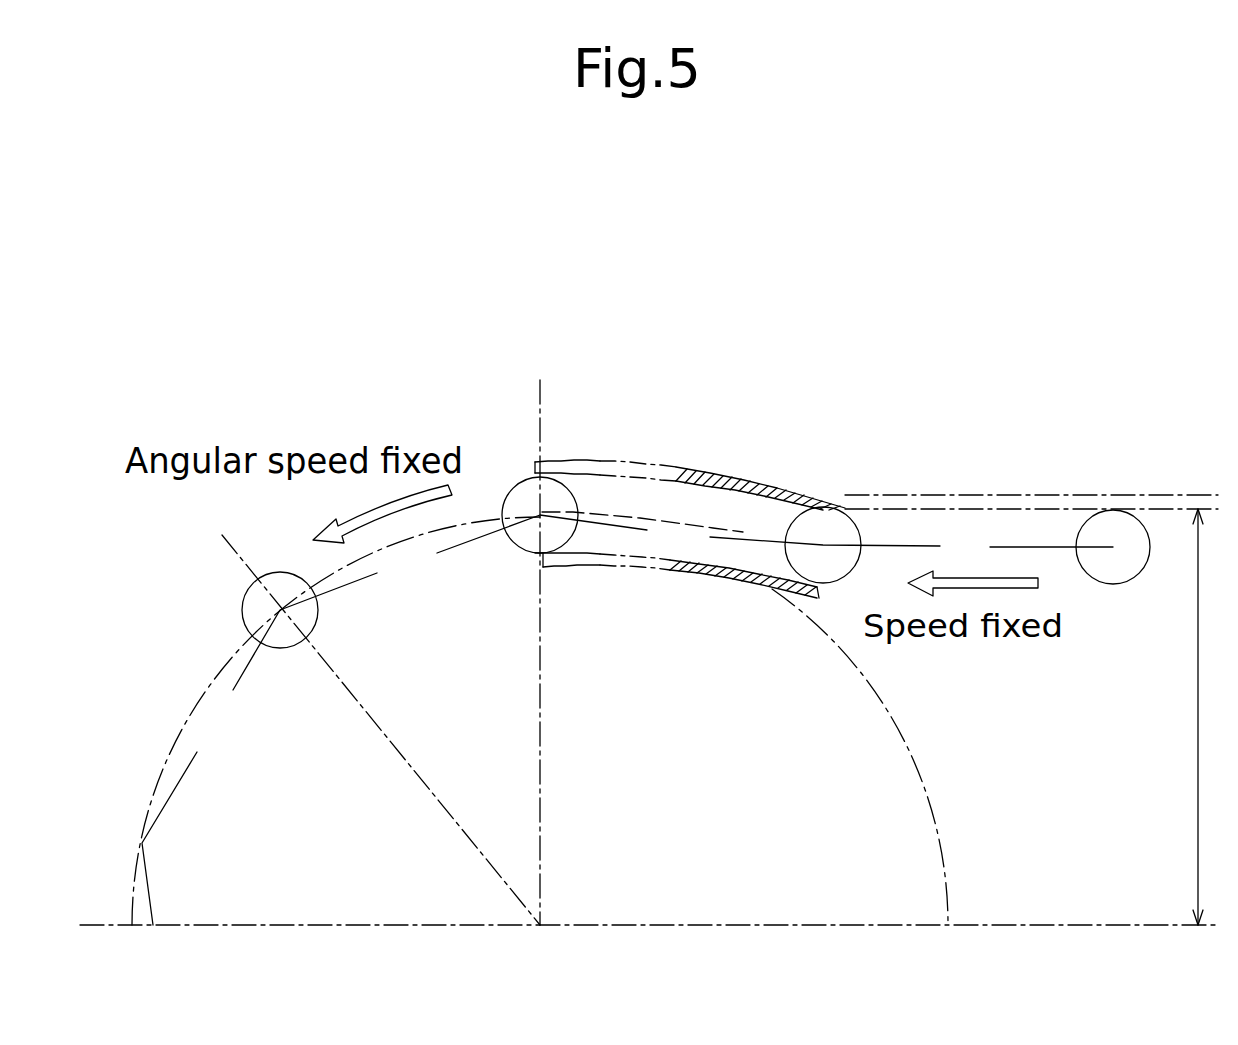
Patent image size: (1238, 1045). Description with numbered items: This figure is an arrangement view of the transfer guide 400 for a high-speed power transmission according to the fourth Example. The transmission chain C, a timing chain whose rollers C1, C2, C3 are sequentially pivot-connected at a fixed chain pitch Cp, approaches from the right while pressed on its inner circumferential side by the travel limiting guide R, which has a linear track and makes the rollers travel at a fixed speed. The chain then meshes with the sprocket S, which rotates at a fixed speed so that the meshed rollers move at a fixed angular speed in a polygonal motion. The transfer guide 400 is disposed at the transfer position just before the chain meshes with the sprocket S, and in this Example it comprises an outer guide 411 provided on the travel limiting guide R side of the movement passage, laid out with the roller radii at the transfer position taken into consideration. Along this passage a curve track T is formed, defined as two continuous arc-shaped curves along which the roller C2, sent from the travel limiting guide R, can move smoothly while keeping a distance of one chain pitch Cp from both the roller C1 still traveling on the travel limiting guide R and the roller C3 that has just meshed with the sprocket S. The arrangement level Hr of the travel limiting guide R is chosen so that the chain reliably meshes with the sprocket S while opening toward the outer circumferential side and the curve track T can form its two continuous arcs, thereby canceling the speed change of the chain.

The outer guide 411 is at (690, 482).
The transfer guide for a high-speed power transmission 400 is at (690, 482).
The curve track T is at (747, 530).
The roller traveling on the travel limiting guide C1 is at (1113, 585).
The roller sent from the travel limiting guide C2 is at (840, 507).
The roller just meshed with the sprocket C3 is at (527, 478).
The transmission chain C is at (900, 547).
The chain pitch Cp is at (738, 568).
The travel limiting guide R is at (1027, 493).
The sprocket S is at (626, 878).
The arrangement level of the travel limiting guide Hr is at (1195, 717).